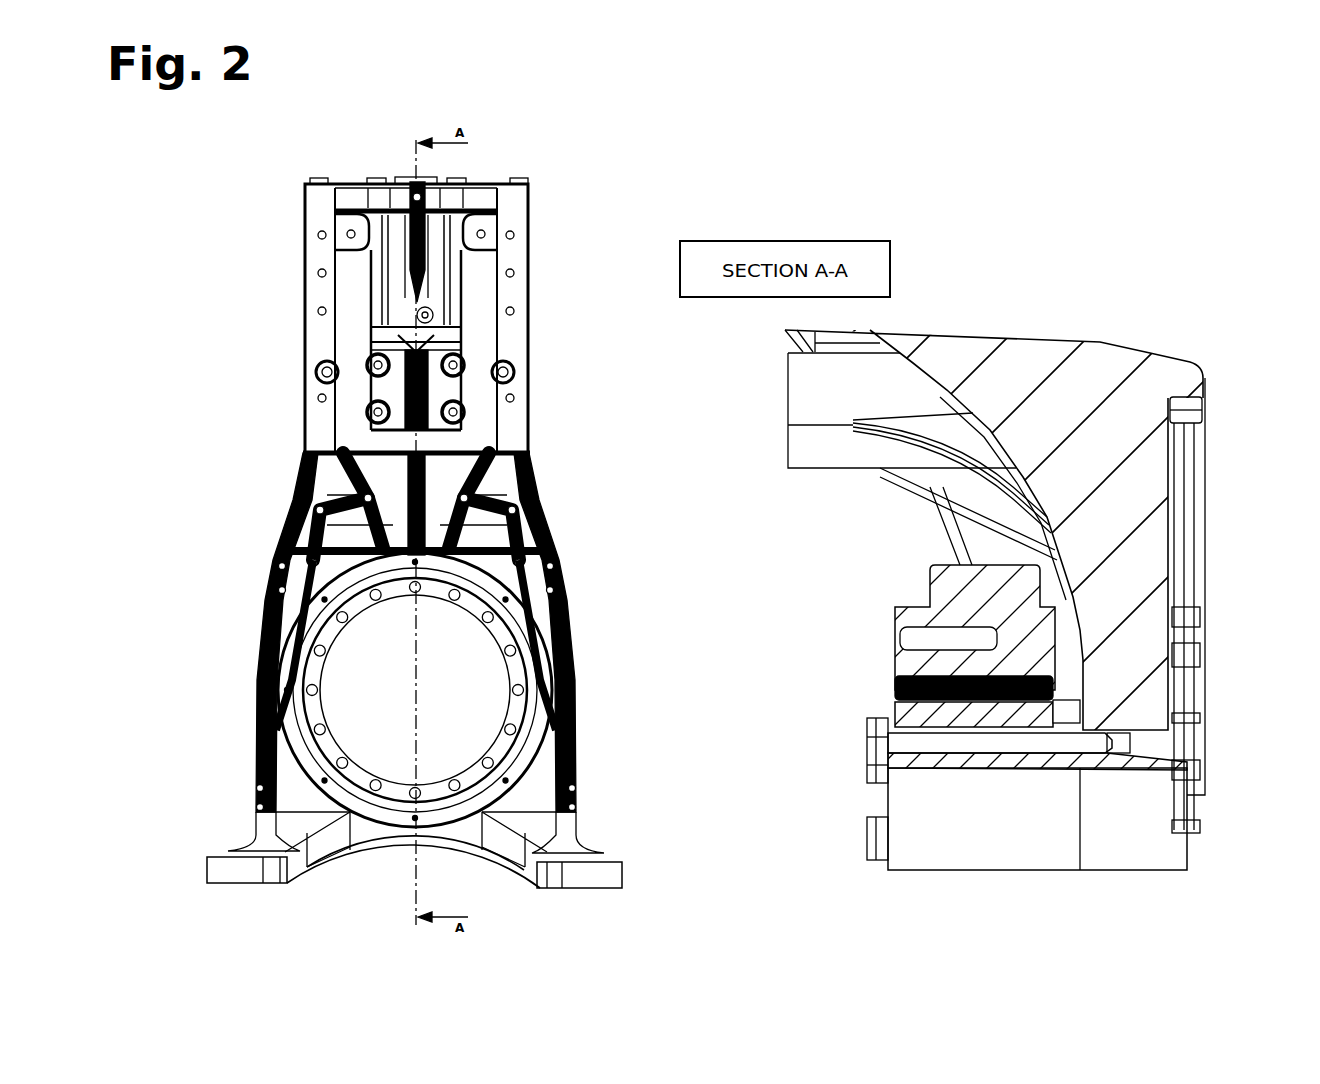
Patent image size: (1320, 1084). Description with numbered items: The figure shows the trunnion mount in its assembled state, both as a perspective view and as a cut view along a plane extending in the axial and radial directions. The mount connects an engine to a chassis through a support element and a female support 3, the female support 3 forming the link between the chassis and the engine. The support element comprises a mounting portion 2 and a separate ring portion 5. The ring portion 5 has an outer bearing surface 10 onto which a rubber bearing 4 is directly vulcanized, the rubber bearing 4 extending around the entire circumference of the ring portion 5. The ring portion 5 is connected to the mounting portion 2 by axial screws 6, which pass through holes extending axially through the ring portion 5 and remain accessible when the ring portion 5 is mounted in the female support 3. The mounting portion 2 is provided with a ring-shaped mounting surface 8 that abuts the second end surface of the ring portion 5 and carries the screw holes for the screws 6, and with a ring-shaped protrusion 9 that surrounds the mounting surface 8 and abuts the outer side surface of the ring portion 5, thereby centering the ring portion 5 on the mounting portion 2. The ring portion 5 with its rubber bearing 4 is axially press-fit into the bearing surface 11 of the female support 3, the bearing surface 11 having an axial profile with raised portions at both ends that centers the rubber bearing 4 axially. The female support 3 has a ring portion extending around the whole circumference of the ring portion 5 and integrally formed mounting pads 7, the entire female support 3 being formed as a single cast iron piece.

The mounting portion 2 is at (495, 537).
The female support 3 is at (290, 796).
The rubber bearing 4 is at (370, 598).
The ring portion 5 is at (470, 598).
The axial screws 6 is at (952, 742).
The mounting pads 7 is at (247, 875).
The ring-shaped mounting surface 8 is at (1087, 760).
The ring-shaped protrusion 9 is at (1072, 712).
The outer bearing surface 10 is at (993, 742).
The bearing surface 11 is at (1000, 632).